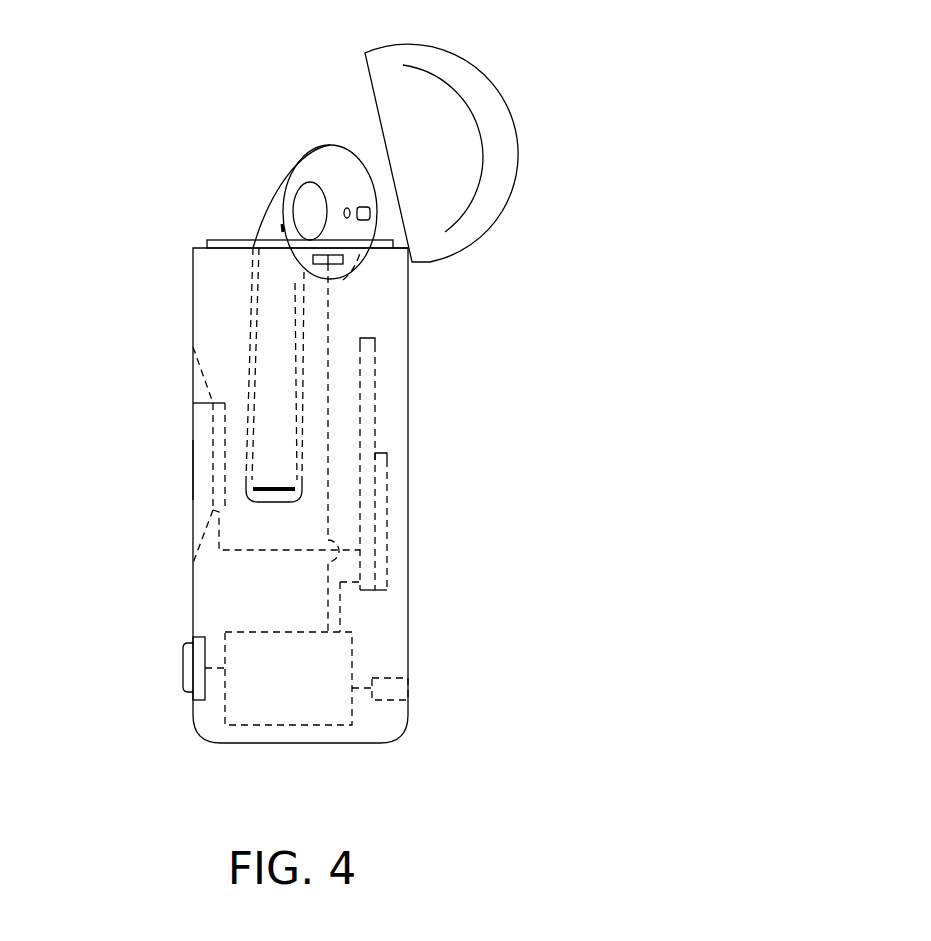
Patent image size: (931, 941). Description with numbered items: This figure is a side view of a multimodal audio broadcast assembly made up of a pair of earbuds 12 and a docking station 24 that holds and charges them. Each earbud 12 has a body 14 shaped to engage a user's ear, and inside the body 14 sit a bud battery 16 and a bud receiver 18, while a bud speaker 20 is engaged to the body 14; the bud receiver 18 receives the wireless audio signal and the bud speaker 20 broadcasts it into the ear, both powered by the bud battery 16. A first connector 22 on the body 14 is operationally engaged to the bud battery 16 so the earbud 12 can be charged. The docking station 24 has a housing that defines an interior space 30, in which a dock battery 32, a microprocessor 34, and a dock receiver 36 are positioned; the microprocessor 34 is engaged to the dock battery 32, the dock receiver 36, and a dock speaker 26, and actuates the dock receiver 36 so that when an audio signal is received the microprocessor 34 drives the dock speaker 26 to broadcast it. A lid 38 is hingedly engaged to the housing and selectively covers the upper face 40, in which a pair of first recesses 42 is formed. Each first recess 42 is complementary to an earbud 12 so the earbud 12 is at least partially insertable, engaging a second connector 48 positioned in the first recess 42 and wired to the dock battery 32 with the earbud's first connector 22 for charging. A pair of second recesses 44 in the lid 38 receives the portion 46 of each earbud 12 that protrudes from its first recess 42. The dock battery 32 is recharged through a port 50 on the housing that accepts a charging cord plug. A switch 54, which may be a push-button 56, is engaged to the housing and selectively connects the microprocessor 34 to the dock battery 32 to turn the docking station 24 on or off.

The earbud 12 is at (270, 195).
The body 14 is at (268, 310).
The bud battery 16 is at (268, 405).
The bud receiver 18 is at (278, 278).
The bud speaker 20 is at (310, 197).
The first connector 22 is at (370, 252).
The docking station 24 is at (192, 518).
The dock speaker 26 is at (193, 472).
The interior space 30 is at (380, 305).
The dock battery 32 is at (335, 655).
The microprocessor 34 is at (373, 407).
The dock receiver 36 is at (385, 483).
The lid 38 is at (498, 155).
The upper face 40 is at (213, 238).
The first recess 42 is at (268, 358).
The second recess 44 is at (433, 125).
The portion 46 is at (335, 145).
The second connector 48 is at (345, 266).
The port 50 is at (392, 687).
The switch 54 is at (182, 655).
The push-button 56 is at (182, 685).